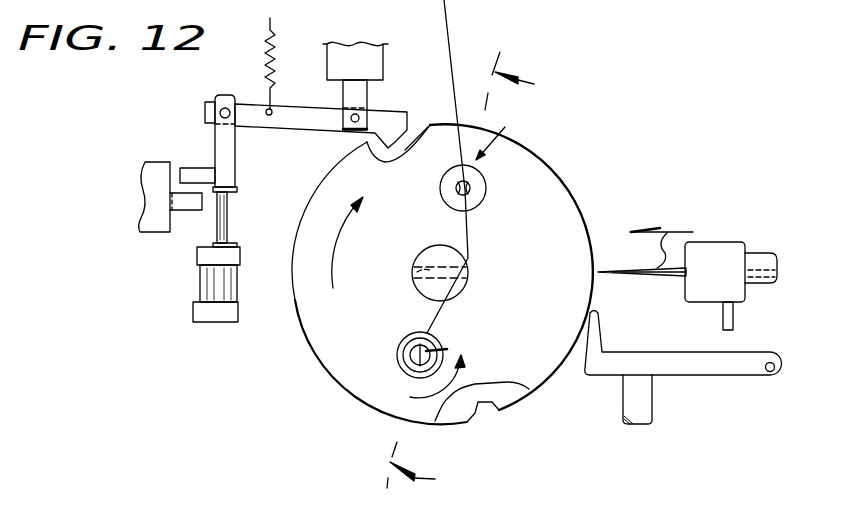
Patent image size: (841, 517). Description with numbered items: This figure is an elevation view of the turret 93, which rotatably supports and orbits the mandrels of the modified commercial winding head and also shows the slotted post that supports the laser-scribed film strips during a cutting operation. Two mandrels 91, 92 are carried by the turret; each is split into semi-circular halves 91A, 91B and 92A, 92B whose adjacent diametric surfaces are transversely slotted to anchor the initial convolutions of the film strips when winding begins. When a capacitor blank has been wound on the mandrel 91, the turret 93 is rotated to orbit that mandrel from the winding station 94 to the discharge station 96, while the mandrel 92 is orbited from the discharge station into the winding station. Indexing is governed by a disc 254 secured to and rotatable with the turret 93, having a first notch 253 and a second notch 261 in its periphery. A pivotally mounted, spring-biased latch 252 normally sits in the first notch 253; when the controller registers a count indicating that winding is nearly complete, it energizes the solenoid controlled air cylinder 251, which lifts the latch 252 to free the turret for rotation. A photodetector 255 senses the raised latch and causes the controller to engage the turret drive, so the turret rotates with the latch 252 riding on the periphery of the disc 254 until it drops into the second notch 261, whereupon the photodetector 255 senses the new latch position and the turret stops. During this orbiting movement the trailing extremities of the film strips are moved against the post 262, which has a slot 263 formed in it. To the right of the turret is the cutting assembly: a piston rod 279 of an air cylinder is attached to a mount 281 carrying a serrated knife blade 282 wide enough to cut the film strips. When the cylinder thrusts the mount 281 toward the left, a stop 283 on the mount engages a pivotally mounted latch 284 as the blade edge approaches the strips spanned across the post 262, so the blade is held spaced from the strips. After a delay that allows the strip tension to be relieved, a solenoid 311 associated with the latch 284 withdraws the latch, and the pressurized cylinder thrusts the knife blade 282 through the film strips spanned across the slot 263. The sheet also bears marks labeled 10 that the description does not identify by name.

The machine frame 10 is at (474, 271).
The mandrel 91 is at (485, 180).
The semi-circular mandrel half 91A is at (468, 191).
The semi-circular mandrel half 91B is at (455, 187).
The mandrel 92 is at (450, 349).
The semi-circular mandrel half 92A is at (433, 338).
The semi-circular mandrel half 92B is at (406, 353).
The turret 93 is at (582, 174).
The winding station 94 is at (503, 138).
The discharge station 96 is at (397, 382).
The solenoid controlled air cylinder 251 is at (200, 278).
The spring-biased latch 252 is at (311, 130).
The first notch 253 is at (345, 143).
The disc 254 is at (424, 122).
The photodetector 255 is at (138, 188).
The second notch 261 is at (493, 404).
The post 262 is at (425, 251).
The slot 263 is at (408, 275).
The piston rod 279 is at (760, 255).
The mount 281 is at (708, 245).
The serrated knife blade 282 is at (625, 268).
The stop 283 is at (735, 322).
The pivotally mounted latch 284 is at (740, 378).
The solenoid 311 is at (645, 407).